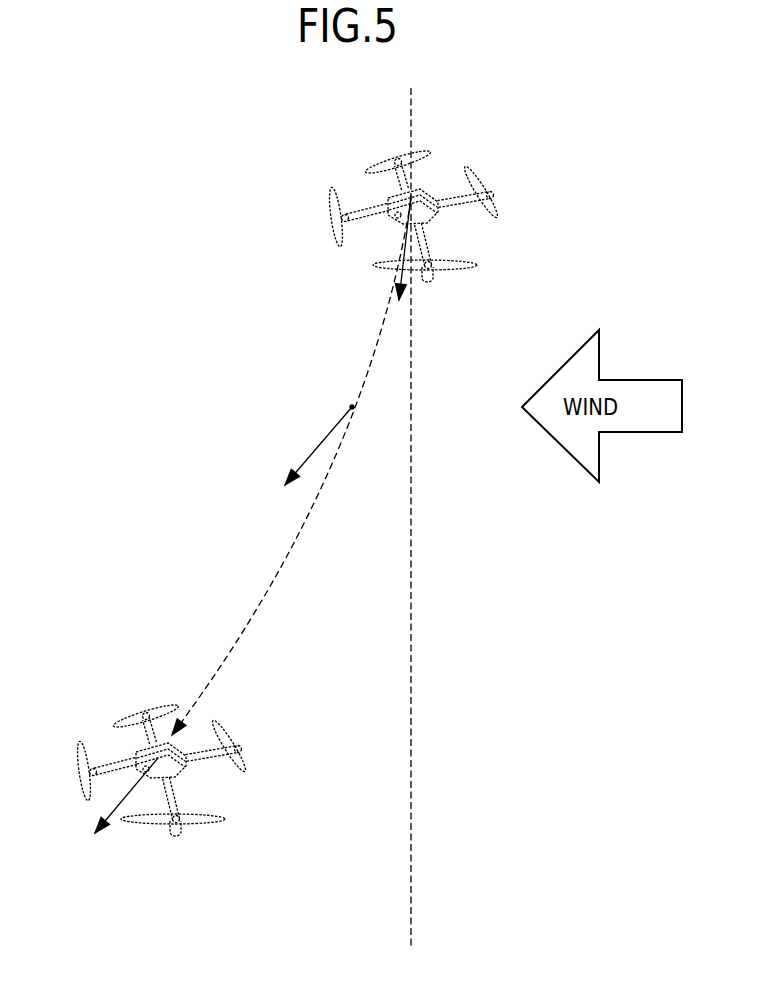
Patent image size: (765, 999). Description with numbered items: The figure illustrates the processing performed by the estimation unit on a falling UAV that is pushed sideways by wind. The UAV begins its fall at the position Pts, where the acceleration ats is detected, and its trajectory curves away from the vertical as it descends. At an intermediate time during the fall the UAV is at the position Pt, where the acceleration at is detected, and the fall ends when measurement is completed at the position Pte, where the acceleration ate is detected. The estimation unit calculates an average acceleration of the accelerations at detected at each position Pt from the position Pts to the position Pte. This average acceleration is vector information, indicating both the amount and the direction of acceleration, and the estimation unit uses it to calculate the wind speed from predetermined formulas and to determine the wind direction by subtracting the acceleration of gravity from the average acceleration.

The position at fall start time Pts is at (418, 198).
The acceleration at fall start time ats is at (410, 250).
The position during fall Pt is at (350, 407).
The acceleration during fall at is at (318, 445).
The position at measurement completion time Pte is at (160, 750).
The acceleration at measurement completion time ate is at (122, 817).